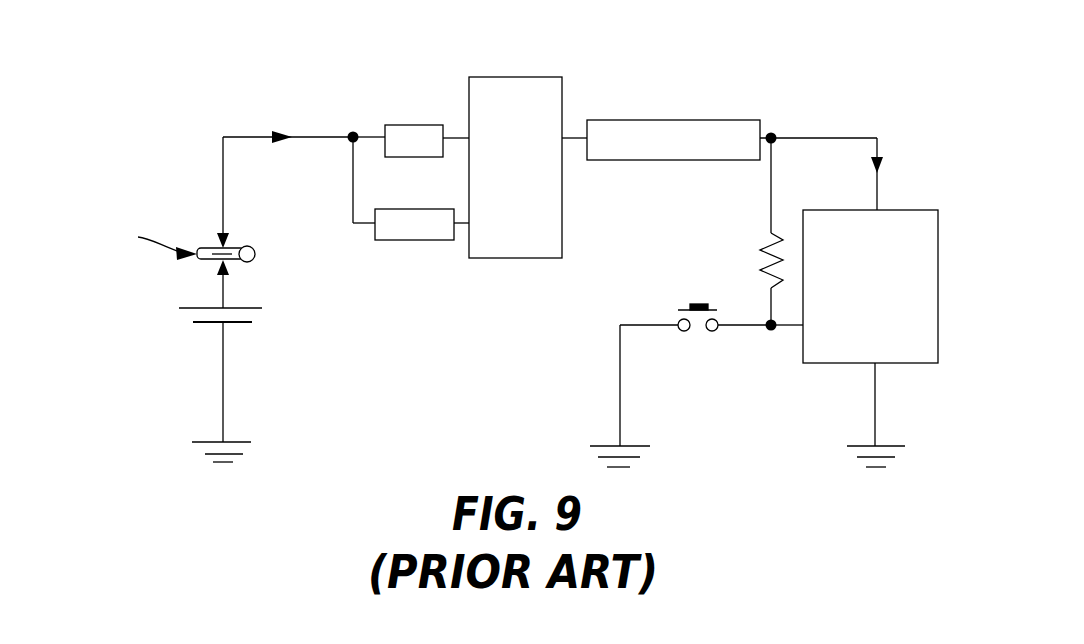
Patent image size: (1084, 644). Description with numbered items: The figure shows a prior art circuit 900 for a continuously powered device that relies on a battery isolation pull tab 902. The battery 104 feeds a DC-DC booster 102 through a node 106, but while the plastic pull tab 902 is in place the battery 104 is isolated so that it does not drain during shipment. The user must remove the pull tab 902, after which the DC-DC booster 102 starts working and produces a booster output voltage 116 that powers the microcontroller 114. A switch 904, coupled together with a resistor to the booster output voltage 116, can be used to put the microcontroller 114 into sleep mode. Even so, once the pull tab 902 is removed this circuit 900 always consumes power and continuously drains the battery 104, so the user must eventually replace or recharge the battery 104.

The prior art circuit 900 is at (491, 249).
The DC-DC booster 102 is at (467, 195).
The battery 104 is at (262, 308).
The input node 106 is at (371, 136).
The microcontroller 114 is at (845, 210).
The booster output voltage 116 is at (843, 137).
The battery isolation pull tab 902 is at (250, 246).
The switch 904 is at (677, 318).